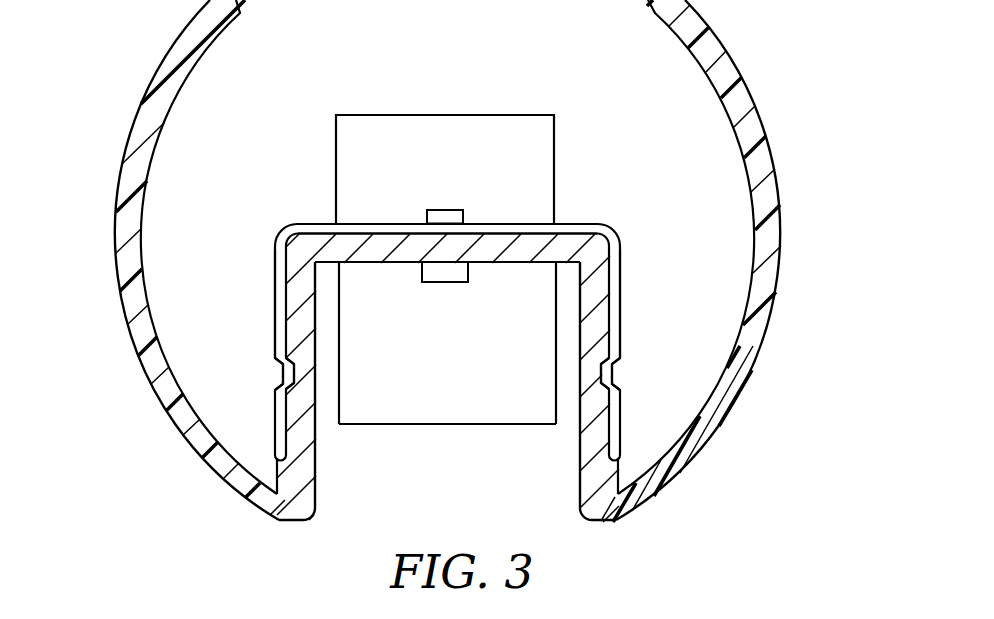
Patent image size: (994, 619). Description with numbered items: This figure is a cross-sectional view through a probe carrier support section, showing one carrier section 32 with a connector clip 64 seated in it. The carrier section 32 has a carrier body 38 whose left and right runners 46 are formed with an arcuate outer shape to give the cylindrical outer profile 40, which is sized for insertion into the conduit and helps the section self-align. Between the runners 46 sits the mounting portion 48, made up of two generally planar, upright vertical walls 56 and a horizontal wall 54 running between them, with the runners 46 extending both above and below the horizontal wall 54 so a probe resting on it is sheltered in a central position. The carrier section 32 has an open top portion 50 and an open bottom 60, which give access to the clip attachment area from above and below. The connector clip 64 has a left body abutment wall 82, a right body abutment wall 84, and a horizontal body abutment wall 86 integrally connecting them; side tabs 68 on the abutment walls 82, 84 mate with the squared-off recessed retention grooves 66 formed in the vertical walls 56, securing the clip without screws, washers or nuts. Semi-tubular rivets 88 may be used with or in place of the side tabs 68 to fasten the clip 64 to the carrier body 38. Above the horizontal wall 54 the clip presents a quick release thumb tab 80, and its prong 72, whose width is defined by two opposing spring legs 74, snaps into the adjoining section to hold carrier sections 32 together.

The carrier section 32 is at (134, 61).
The carrier body 38 is at (359, 237).
The cylindrical outer profile 40 is at (112, 236).
The runner 46 is at (137, 342).
The mounting portion 48 is at (486, 242).
The open top portion 50 is at (434, 47).
The horizontal wall 54 is at (562, 236).
The vertical walls 56 is at (300, 316).
The open bottom 60 is at (437, 498).
The connector clip 64 is at (557, 128).
The recessed retention grooves 66 is at (282, 383).
The side tabs 68 is at (283, 371).
The prong 72 is at (373, 385).
The spring legs 74 is at (529, 382).
The thumb tab 80 is at (490, 127).
The left body abutment wall 82 is at (276, 273).
The right body abutment wall 84 is at (620, 258).
The horizontal body abutment wall 86 is at (527, 227).
The semi-tubular rivets 88 is at (440, 208).